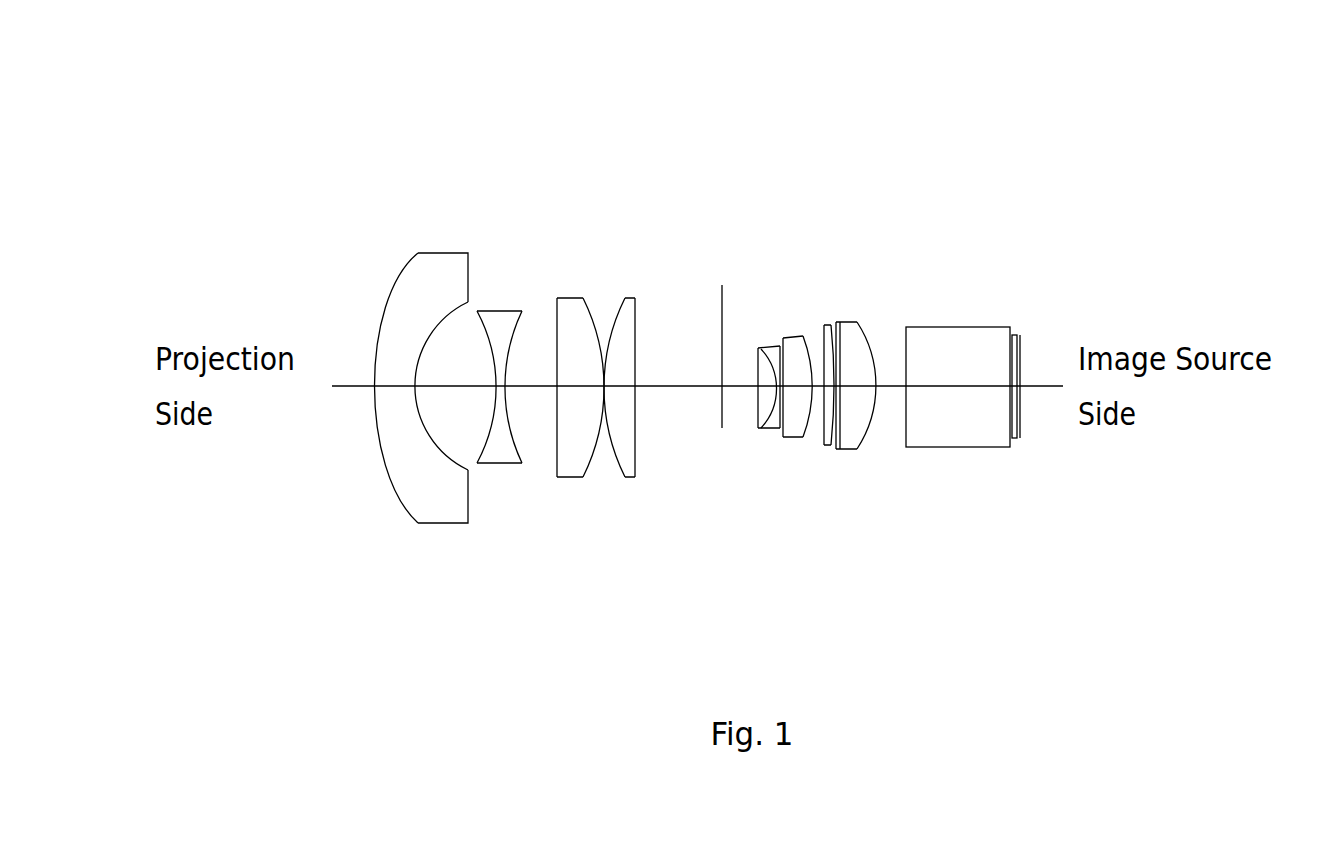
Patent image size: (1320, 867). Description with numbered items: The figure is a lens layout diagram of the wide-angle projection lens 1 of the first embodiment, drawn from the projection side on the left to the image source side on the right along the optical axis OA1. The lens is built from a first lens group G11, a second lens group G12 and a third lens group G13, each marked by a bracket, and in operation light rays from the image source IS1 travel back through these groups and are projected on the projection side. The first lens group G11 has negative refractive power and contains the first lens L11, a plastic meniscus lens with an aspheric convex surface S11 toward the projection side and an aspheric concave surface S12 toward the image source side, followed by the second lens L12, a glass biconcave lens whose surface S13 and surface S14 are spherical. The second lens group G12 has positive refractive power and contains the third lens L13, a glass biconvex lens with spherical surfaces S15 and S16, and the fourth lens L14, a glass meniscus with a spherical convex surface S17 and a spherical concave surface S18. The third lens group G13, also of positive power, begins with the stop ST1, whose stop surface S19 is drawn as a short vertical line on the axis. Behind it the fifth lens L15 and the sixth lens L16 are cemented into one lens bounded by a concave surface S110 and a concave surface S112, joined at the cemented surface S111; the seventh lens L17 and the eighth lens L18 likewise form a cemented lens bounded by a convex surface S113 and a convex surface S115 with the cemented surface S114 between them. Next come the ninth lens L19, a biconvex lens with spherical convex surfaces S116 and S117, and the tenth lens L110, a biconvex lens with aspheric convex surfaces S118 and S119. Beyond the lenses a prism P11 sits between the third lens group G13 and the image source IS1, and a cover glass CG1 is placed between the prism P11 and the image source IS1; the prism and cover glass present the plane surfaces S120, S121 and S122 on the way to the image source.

The wide-angle projection lens 1 is at (843, 85).
The first lens group G11 is at (512, 158).
The second lens group G12 is at (628, 158).
The third lens group G13 is at (993, 158).
The first lens L11 is at (392, 373).
The second lens L12 is at (487, 371).
The third lens L13 is at (552, 388).
The fourth lens L14 is at (621, 374).
The stop ST1 is at (691, 325).
The fifth lens L15 is at (734, 354).
The sixth lens L16 is at (761, 369).
The seventh lens L17 is at (814, 374).
The eighth lens L18 is at (862, 383).
The ninth lens L19 is at (907, 364).
The tenth lens L110 is at (922, 329).
The prism P11 is at (995, 335).
The cover glass CG1 is at (1061, 336).
The image source IS1 is at (1021, 336).
The optical axis OA1 is at (363, 387).
The convex surface S11 is at (400, 495).
The concave surface S12 is at (456, 474).
The surface S13 is at (493, 465).
The surface S14 is at (512, 467).
The surface S15 is at (552, 440).
The surface S16 is at (600, 447).
The convex surface S17 is at (615, 447).
The concave surface S18 is at (637, 447).
The stop surface S19 is at (722, 428).
The concave surface S110 is at (760, 431).
The cemented surface S111 is at (770, 430).
The concave surface S112 is at (780, 432).
The convex surface S113 is at (785, 438).
The cemented surface S114 is at (803, 438).
The convex surface S115 is at (822, 446).
The convex surface S116 is at (832, 447).
The convex surface S117 is at (840, 452).
The convex surface S118 is at (858, 452).
The convex surface S119 is at (877, 451).
The plane surface S120 is at (905, 428).
The plane surface S121 is at (1012, 420).
The plane surface S122 is at (1016, 438).